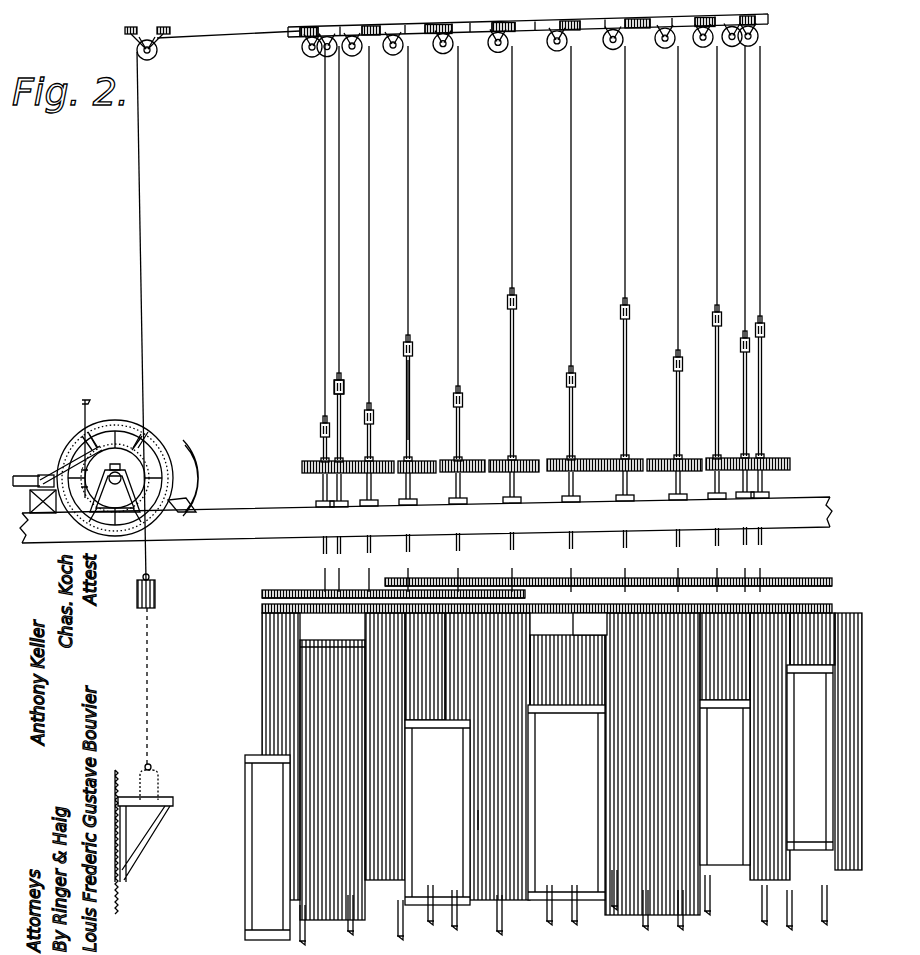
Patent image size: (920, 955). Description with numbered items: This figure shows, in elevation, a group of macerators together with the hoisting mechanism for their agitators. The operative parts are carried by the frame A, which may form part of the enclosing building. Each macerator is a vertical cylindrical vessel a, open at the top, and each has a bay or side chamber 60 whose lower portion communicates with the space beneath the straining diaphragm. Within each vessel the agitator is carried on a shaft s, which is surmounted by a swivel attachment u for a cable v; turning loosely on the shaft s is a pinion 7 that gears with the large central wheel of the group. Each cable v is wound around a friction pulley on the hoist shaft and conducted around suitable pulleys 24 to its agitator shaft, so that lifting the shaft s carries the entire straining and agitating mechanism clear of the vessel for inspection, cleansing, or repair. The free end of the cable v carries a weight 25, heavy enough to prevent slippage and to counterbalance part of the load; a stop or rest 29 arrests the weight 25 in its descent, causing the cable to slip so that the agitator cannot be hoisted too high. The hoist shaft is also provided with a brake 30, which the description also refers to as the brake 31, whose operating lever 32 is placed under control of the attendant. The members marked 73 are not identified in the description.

The pulleys 24 is at (533, 32).
The weight 25 is at (147, 687).
The stop or rest 29 is at (144, 842).
The brake 30 is at (127, 465).
The brake 31 is at (71, 461).
The operating lever 32 is at (32, 484).
The pinion 7 is at (544, 462).
The rod feet 73 is at (542, 319).
The bay or side chamber 60 is at (553, 761).
The cable v is at (148, 316).
The swivel attachment u is at (535, 343).
The agitator shaft s is at (527, 400).
The frame A is at (426, 520).
The vertical cylindrical vessel a is at (563, 797).